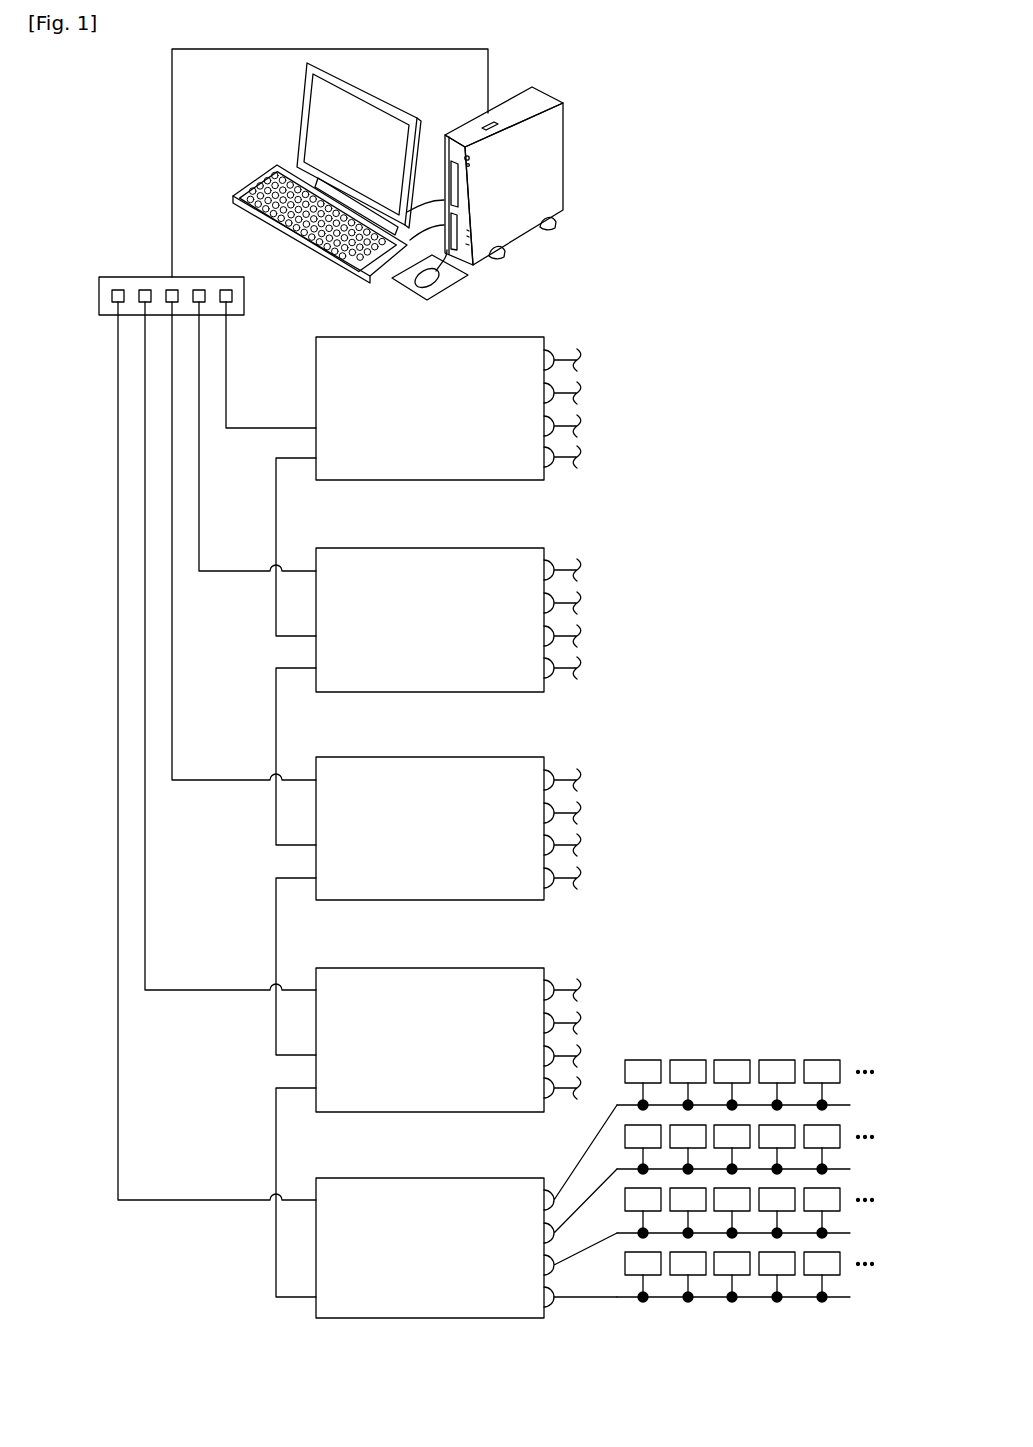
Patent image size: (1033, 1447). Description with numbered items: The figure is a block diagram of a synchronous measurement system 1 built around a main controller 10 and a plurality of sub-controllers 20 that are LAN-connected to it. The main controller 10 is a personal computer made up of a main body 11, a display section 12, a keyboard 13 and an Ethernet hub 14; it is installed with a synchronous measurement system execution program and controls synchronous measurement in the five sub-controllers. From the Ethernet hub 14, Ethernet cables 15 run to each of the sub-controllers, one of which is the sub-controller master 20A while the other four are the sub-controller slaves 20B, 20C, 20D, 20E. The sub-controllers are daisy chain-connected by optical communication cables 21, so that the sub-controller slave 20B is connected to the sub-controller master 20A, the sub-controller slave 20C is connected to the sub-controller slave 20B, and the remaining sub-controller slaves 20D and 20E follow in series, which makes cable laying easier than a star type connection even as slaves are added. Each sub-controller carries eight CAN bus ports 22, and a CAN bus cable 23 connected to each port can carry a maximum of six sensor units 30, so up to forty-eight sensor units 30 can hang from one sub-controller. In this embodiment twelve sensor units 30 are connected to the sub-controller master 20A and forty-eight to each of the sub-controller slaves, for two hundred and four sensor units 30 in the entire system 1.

The synchronous measurement system 1 is at (592, 290).
The main controller 10 is at (590, 98).
The main body 11 is at (545, 170).
The display section 12 is at (300, 110).
The keyboard 13 is at (270, 226).
The Ethernet hub 14 is at (244, 293).
The Ethernet cables 15 is at (118, 853).
The sub-controllers 20 is at (645, 705).
The sub-controller master 20A is at (503, 337).
The sub-controller slave 20B is at (443, 547).
The sub-controller slave 20C is at (443, 757).
The sub-controller slave 20D is at (443, 967).
The sub-controller slave 20E is at (443, 1177).
The optical communication cables 21 is at (276, 1254).
The CAN bus ports 22 is at (552, 1306).
The CAN bus cable 23 is at (612, 1305).
The sensor units 30 is at (820, 1060).